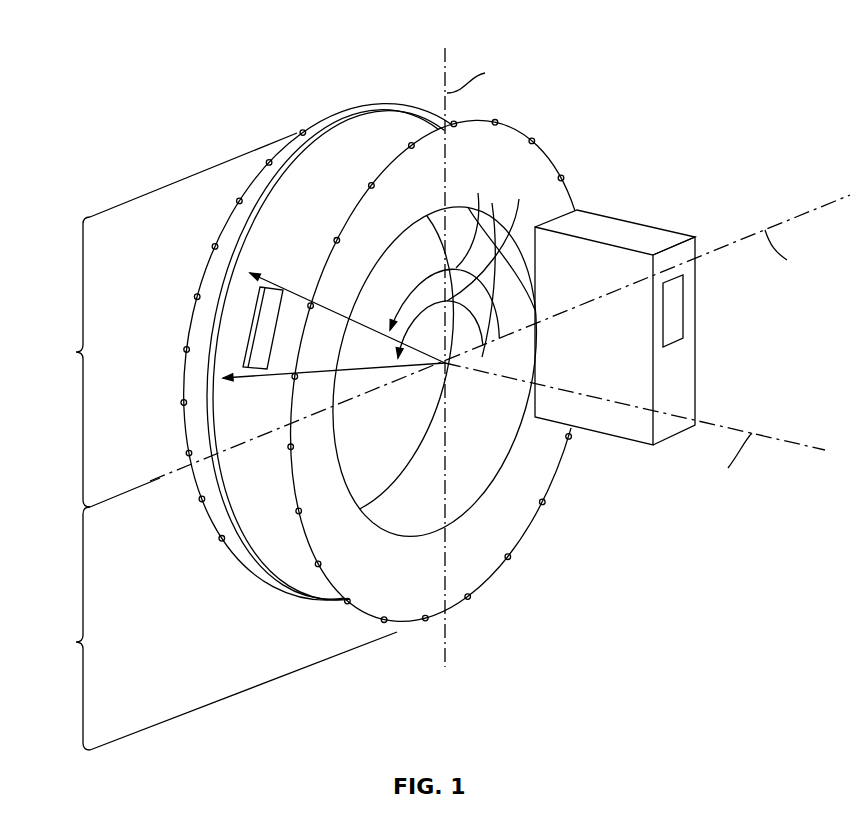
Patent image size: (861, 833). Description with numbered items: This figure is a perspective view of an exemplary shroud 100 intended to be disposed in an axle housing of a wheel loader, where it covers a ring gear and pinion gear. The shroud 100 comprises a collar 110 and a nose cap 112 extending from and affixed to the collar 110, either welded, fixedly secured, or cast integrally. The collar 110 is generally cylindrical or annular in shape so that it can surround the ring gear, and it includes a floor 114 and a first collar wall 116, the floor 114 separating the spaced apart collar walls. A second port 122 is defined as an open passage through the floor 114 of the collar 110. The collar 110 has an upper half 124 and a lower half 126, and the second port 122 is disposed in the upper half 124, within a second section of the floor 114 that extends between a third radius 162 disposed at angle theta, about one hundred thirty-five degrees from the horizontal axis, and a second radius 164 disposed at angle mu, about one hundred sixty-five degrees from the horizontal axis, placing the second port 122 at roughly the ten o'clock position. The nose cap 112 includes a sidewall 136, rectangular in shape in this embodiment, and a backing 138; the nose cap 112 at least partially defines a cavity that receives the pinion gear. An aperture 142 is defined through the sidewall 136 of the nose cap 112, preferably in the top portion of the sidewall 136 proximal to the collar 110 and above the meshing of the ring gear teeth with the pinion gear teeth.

The shroud 100 is at (640, 62).
The collar 110 is at (544, 511).
The nose cap 112 is at (689, 233).
The floor 114 is at (263, 263).
The first collar wall 116 is at (310, 345).
The second port 122 is at (265, 325).
The upper half 124 is at (164, 320).
The lower half 126 is at (214, 628).
The sidewall 136 is at (680, 365).
The backing 138 is at (630, 360).
The aperture 142 is at (672, 293).
The third radius 162 is at (327, 305).
The second radius 164 is at (323, 372).